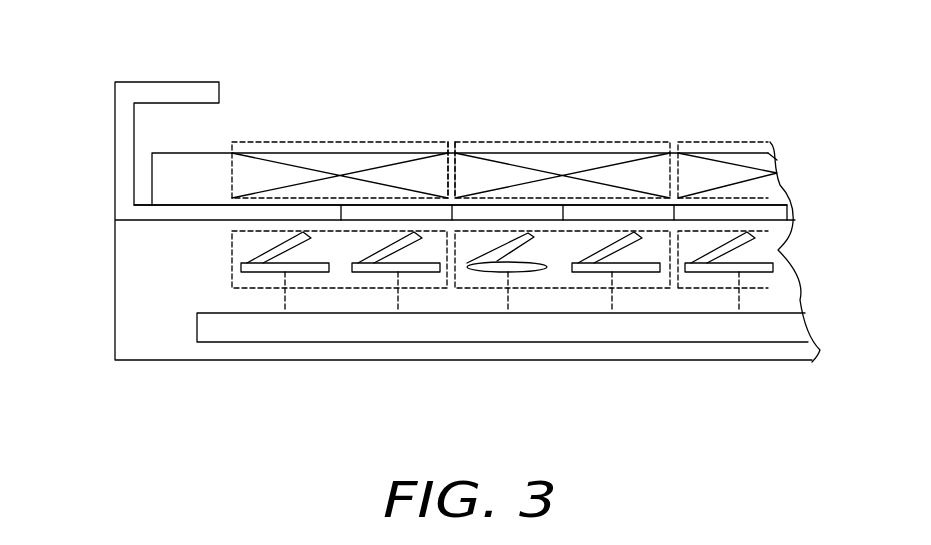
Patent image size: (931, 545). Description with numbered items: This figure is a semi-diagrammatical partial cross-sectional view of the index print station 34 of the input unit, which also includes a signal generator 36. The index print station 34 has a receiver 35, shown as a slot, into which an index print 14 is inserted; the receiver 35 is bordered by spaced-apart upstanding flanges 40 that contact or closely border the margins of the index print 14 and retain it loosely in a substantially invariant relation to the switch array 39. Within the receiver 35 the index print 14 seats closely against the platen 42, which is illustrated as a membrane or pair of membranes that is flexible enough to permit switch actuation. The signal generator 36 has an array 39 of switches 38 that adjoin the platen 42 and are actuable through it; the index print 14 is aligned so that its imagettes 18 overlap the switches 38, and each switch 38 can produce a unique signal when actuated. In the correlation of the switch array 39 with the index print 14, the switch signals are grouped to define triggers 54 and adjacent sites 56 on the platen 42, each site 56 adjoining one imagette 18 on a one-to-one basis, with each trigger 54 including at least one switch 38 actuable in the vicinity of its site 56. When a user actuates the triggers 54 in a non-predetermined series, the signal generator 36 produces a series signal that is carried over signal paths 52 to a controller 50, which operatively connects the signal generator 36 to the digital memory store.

The index print 14 is at (770, 160).
The imagettes 18 is at (350, 152).
The index print station 34 is at (583, 55).
The receiver 35 is at (205, 126).
The signal generator 36 is at (395, 360).
The switches 38 is at (760, 272).
The switch array 39 is at (226, 274).
The upstanding flanges 40 is at (180, 82).
The platen 42 is at (197, 207).
The controller 50 is at (633, 343).
The signal paths 52 is at (285, 294).
The triggers 54 is at (540, 290).
The sites 56 is at (527, 142).